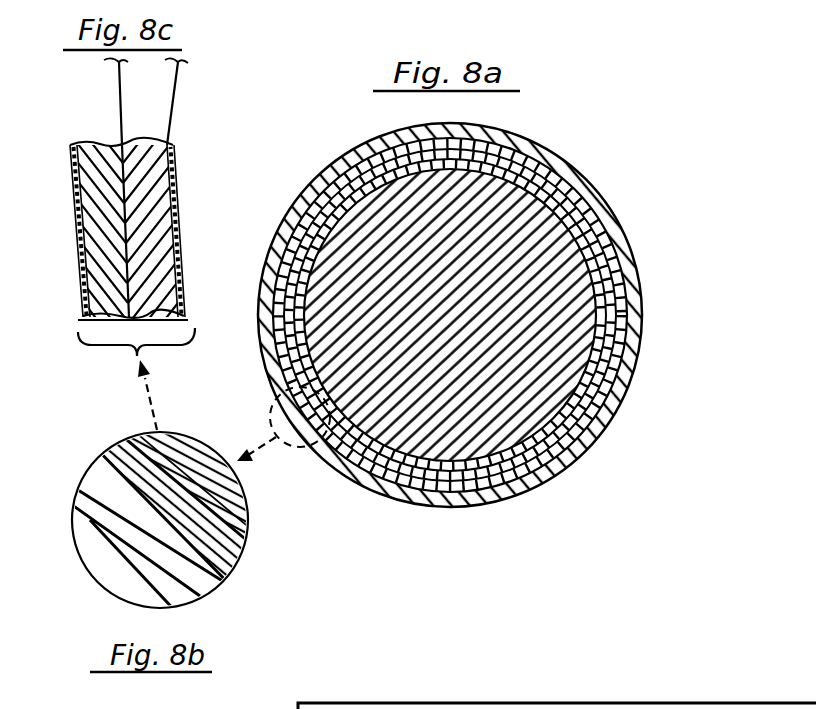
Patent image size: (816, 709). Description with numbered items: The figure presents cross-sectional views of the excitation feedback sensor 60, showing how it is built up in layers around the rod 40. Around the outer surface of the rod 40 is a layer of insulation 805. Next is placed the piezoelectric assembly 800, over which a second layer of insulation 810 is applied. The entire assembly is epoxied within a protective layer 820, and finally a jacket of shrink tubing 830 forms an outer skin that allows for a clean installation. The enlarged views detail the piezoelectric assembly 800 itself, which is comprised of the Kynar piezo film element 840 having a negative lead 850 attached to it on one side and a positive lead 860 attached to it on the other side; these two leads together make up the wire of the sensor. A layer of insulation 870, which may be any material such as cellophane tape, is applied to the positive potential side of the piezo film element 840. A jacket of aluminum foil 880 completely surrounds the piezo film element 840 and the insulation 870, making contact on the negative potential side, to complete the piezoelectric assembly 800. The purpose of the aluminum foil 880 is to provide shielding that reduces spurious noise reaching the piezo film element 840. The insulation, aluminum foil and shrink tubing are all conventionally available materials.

In FIG. 8A, the rod 40 is at (566, 339).
In FIG. 8B, the rod 40 is at (208, 450).
In FIG. 8A, the excitation feedback sensor 60 is at (622, 178).
In FIG. 8B, the piezoelectric assembly 800 is at (244, 559).
In FIG. 8C, the piezoelectric assembly 800 is at (193, 216).
In FIG. 8B, the layer of insulation 805 is at (244, 521).
In FIG. 8B, the second layer of insulation 810 is at (138, 453).
In FIG. 8B, the protective layer 820 is at (217, 585).
In FIG. 8A, the jacket of shrink tubing 830 is at (613, 224).
In FIG. 8B, the jacket of shrink tubing 830 is at (100, 490).
In FIG. 8C, the piezo film element 840 is at (165, 285).
In FIG. 8C, the negative lead 850 is at (173, 101).
In FIG. 8C, the positive lead 860 is at (118, 106).
In FIG. 8C, the layer of insulation 870 is at (103, 271).
In FIG. 8C, the jacket of aluminum foil 880 is at (72, 206).